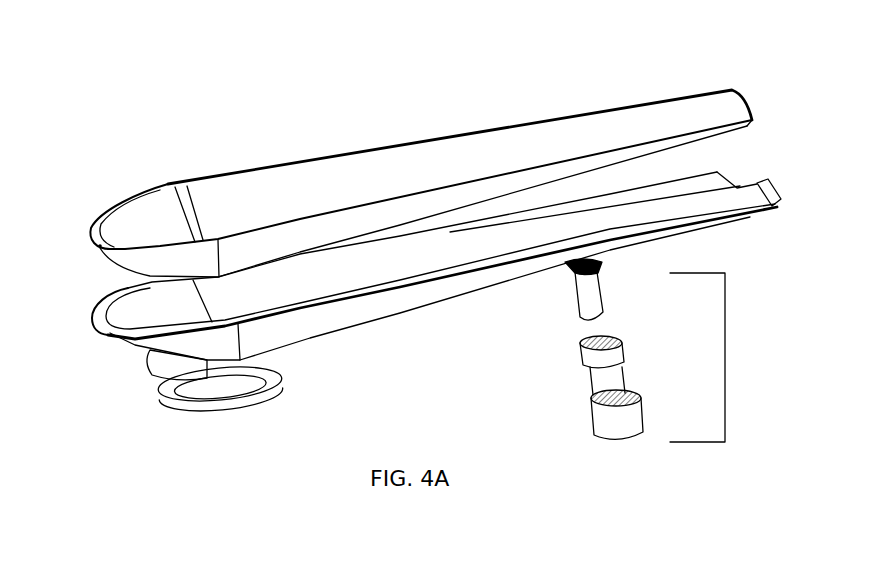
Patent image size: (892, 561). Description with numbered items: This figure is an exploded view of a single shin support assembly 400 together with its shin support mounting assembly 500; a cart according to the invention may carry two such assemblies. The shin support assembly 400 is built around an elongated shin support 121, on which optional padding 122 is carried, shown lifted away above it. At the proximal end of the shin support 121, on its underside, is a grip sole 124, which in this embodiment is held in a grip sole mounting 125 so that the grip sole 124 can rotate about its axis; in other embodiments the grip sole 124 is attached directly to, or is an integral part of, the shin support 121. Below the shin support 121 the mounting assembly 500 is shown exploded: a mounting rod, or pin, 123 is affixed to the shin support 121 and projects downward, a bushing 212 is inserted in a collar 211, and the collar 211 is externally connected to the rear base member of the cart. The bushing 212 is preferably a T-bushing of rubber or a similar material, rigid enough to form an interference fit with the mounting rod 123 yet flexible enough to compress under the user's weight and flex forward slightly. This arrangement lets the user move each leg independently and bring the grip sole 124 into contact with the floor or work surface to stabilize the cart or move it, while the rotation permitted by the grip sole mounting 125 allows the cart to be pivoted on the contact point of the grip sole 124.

The shin support assembly 400 is at (152, 117).
The padding 122 is at (421, 183).
The shin support 121 is at (436, 226).
The mounting rod 123 is at (632, 289).
The grip sole 124 is at (168, 433).
The grip sole mounting 125 is at (130, 385).
The collar 211 is at (649, 414).
The bushing 212 is at (644, 365).
The shin support mounting assembly 500 is at (725, 357).